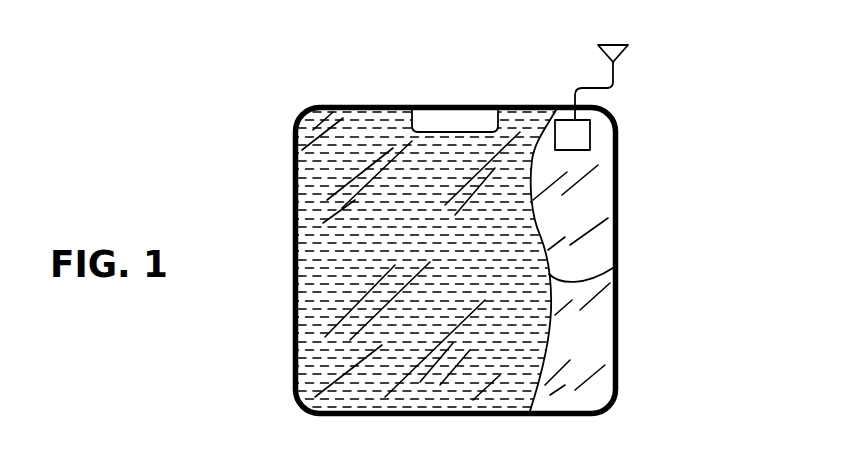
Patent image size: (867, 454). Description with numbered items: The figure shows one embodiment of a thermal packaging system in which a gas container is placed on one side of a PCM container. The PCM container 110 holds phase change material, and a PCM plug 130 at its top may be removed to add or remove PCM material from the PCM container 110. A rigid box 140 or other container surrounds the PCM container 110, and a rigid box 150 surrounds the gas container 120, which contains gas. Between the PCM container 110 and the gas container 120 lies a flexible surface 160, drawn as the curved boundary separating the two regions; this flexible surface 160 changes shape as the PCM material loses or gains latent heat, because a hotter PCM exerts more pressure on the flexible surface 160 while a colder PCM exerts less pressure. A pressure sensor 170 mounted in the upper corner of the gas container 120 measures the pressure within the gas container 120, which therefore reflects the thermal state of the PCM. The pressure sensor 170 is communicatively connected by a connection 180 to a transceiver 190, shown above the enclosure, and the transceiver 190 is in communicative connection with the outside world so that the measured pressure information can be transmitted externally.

The PCM container 110 is at (327, 315).
The gas container 120 is at (597, 330).
The PCM plug 130 is at (427, 118).
The rigid box 140 is at (297, 205).
The rigid box 150 is at (617, 205).
The flexible surface 160 is at (617, 268).
The pressure sensor 170 is at (577, 132).
The communicative connection 180 is at (574, 90).
The transceiver 190 is at (631, 47).